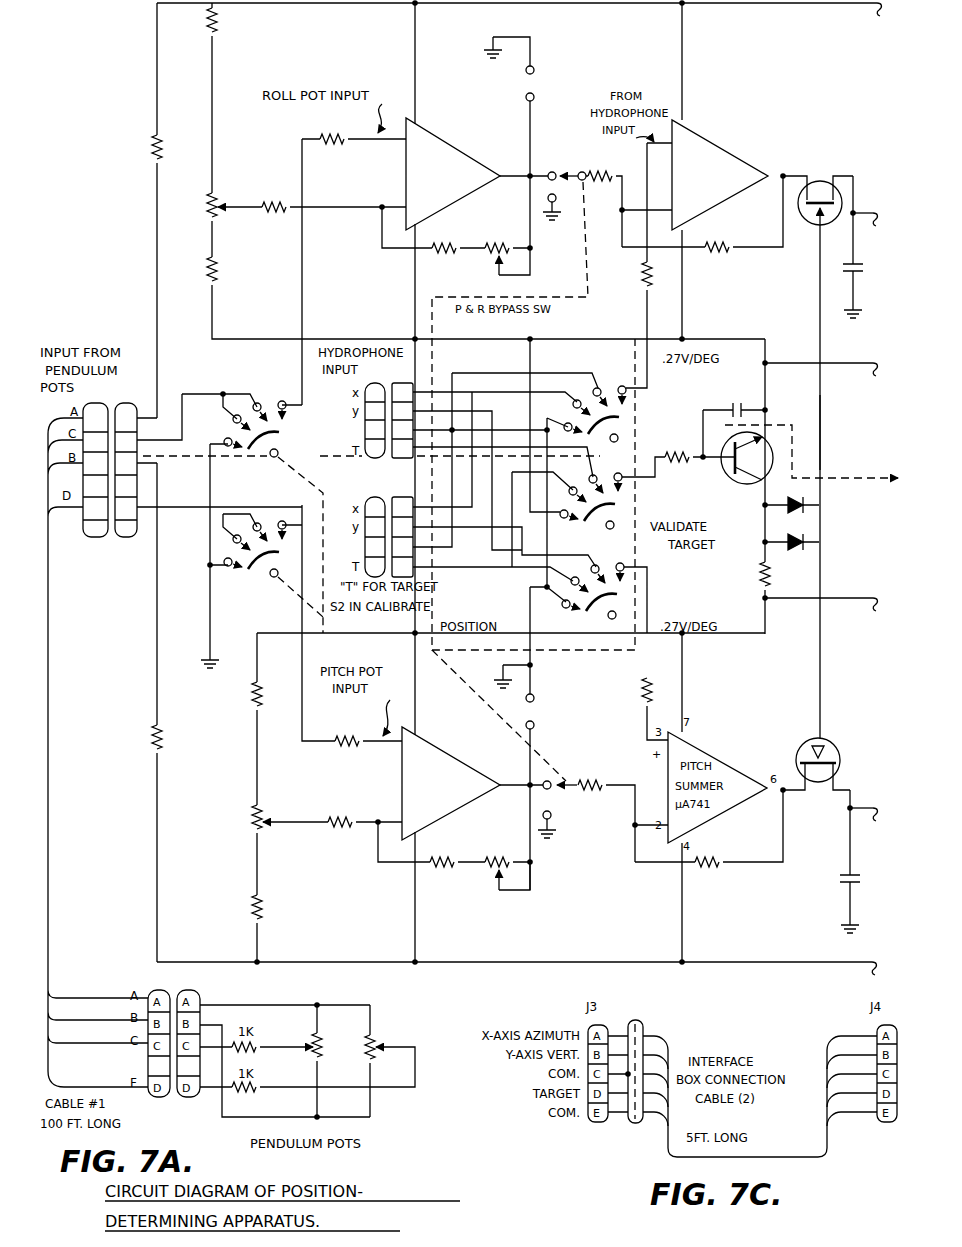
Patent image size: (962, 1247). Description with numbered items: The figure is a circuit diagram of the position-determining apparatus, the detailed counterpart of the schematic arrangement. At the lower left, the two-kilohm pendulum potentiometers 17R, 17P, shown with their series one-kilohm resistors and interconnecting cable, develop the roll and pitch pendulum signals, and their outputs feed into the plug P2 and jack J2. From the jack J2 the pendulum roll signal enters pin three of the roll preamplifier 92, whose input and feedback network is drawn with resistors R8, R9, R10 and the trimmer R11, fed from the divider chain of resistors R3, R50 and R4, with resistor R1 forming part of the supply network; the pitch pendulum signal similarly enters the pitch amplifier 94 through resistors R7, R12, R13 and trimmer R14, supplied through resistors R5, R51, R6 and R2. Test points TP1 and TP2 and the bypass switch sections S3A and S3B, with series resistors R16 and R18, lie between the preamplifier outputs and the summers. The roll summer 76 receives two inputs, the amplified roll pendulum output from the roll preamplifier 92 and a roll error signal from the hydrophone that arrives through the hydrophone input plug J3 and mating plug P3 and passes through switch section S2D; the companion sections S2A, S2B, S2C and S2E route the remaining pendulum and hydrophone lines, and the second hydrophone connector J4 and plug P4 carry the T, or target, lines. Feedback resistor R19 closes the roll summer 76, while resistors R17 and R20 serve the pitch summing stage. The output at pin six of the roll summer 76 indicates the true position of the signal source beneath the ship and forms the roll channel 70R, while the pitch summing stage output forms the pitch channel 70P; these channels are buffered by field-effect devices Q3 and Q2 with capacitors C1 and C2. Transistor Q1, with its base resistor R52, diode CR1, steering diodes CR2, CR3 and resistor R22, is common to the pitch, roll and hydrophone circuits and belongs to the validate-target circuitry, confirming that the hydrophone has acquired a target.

The roll preamplifier 92 is at (452, 146).
The pitch amplifier 94 is at (447, 756).
The roll summer 76 is at (725, 150).
The roll channel 70R is at (851, 432).
The pitch channel 70P is at (811, 484).
The roll pendulum potentiometer 17R is at (319, 1061).
The pitch pendulum potentiometer 17P is at (376, 1061).
The resistor 1K R1 is at (141, 145).
The resistor 1K R2 is at (170, 736).
The resistor 1K R3 is at (224, 21).
The resistor 1K R4 is at (225, 271).
The resistor 1K R5 is at (269, 694).
The resistor 1K R6 is at (270, 904).
The resistor 6.8K R7 is at (363, 742).
The resistor 6.8K R8 is at (328, 138).
The resistor 5.62K R9 is at (328, 207).
The resistor 10K R10 is at (442, 263).
The trim pot 5K R11 is at (496, 231).
The resistor 5.62K R12 is at (332, 821).
The resistor 10K R13 is at (448, 863).
The trim pot 5K R14 is at (532, 878).
The resistor 49.9K R16 is at (602, 198).
The resistor 27K R17 is at (636, 698).
The resistor 49.9K R18 is at (606, 811).
The resistor 39.2K R19 is at (740, 225).
The resistor 39.2K R20 is at (736, 846).
The resistor 10K R22 is at (747, 573).
The pot 100 R50 is at (217, 206).
The pot 100 R51 is at (235, 814).
The resistor 27K R52 is at (678, 456).
The tube Q1 is at (724, 472).
The FET 2N5163 Q2 is at (816, 759).
The FET 2N5163 Q3 is at (818, 197).
The capacitor C1 is at (842, 291).
The capacitor 1 MFD C2 is at (863, 896).
The diode CR1 is at (734, 401).
The diode CR2 is at (792, 497).
The diode CR3 is at (792, 550).
The switch section S2A is at (255, 438).
The switch section S2B is at (253, 558).
The switch section S2C is at (587, 507).
The switch S2D is at (589, 419).
The switch section S2E is at (586, 597).
The bypass switch section S3A is at (567, 165).
The bypass switch section S3B is at (560, 794).
The test point TP1 is at (542, 730).
The test point TP2 is at (542, 97).
The plug P2 is at (95, 462).
The plug J2 is at (126, 462).
The hydrophone input plug J3 is at (375, 413).
The hydrophone input plug P3 is at (402, 413).
The plug J4 is at (375, 530).
The plug P4 is at (402, 530).